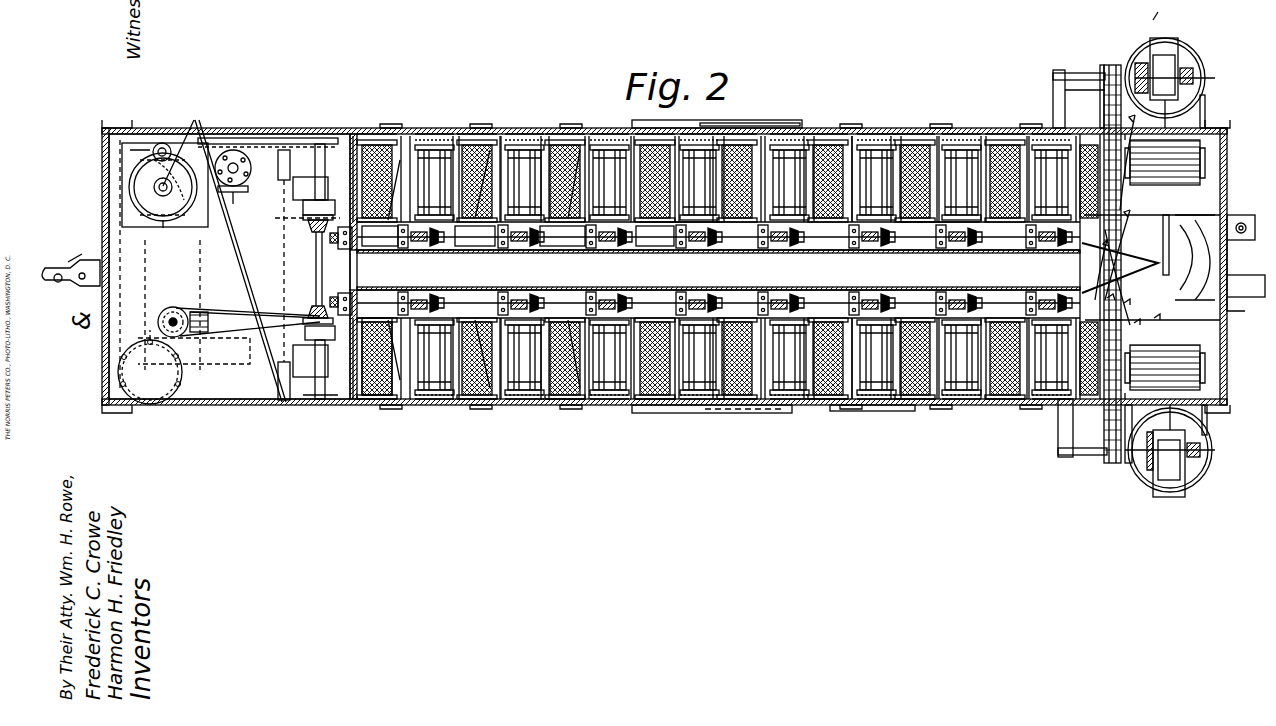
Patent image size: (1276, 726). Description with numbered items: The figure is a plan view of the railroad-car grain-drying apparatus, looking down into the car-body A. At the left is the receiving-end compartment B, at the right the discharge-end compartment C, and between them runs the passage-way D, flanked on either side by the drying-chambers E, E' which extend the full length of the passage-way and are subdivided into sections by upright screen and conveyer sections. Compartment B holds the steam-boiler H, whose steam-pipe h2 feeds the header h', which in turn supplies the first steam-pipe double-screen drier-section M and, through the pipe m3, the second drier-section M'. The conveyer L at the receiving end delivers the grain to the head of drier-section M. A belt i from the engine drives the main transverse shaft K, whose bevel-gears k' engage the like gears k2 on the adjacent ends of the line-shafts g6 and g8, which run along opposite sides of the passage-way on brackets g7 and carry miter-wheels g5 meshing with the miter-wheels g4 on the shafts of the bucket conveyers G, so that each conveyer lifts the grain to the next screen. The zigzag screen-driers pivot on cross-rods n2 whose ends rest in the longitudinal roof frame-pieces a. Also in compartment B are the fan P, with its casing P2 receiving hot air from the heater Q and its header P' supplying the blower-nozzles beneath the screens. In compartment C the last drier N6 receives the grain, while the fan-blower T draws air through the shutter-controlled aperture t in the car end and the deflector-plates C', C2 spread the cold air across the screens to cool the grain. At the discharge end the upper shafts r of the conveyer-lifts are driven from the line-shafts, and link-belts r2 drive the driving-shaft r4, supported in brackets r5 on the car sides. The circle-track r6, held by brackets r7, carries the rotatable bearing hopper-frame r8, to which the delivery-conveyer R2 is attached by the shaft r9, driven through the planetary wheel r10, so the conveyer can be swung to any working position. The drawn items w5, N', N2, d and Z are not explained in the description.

The car-body A is at (582, 131).
The receiving-end compartment B is at (229, 266).
The steam-boiler H is at (165, 185).
The conveyer L is at (244, 186).
The steam-pipe h2 is at (190, 137).
The header h' is at (281, 270).
The belt i is at (312, 138).
The header of the fan P' is at (360, 253).
The fan casing P2 is at (310, 276).
The fan P is at (322, 382).
The heater Q is at (335, 418).
The pipe m3 is at (297, 219).
The bevel-gears k' is at (305, 269).
The main transverse shaft K is at (318, 262).
The bevel-gears k2 is at (338, 282).
The belt pulley w5 is at (231, 310).
The conveyer G is at (743, 266).
The longitudinal frame-pieces a is at (436, 252).
The drying-chamber E is at (718, 270).
The drying-chamber E' is at (470, 351).
The steam-pipe double-screen drier-section M is at (380, 236).
The steam-pipe double-screen drier-section M' is at (475, 236).
The rail section N' is at (562, 236).
The rail section N2 is at (655, 236).
The miter-wheel g4 is at (778, 248).
The miter-wheel g5 is at (810, 250).
The line-shaft g6 is at (398, 250).
The brackets g7 is at (510, 250).
The line-shaft g8 is at (535, 292).
The partition d is at (685, 252).
The passage-way D is at (898, 266).
The discharge-end compartment C is at (1152, 266).
The deflector-plate C' is at (1127, 220).
The deflector-plate C2 is at (1166, 257).
The drier N6 is at (1122, 236).
The fan-blower T is at (1224, 218).
The shutter-controlled aperture t is at (1236, 289).
The bottom plate Z is at (713, 406).
The cross-rod n2 is at (905, 420).
The upper shafts r is at (1058, 94).
The link-belts r2 is at (1104, 100).
The driving-shaft r4 is at (1072, 82).
The brackets r5 is at (1112, 68).
The circle-track r6 is at (1205, 58).
The brackets r7 is at (1206, 110).
The rotatable bearing hopper-frame r8 is at (1198, 70).
The shaft r9 is at (1200, 455).
The delivery-conveyer R2 is at (1166, 36).
The planetary wheel r10 is at (1164, 10).